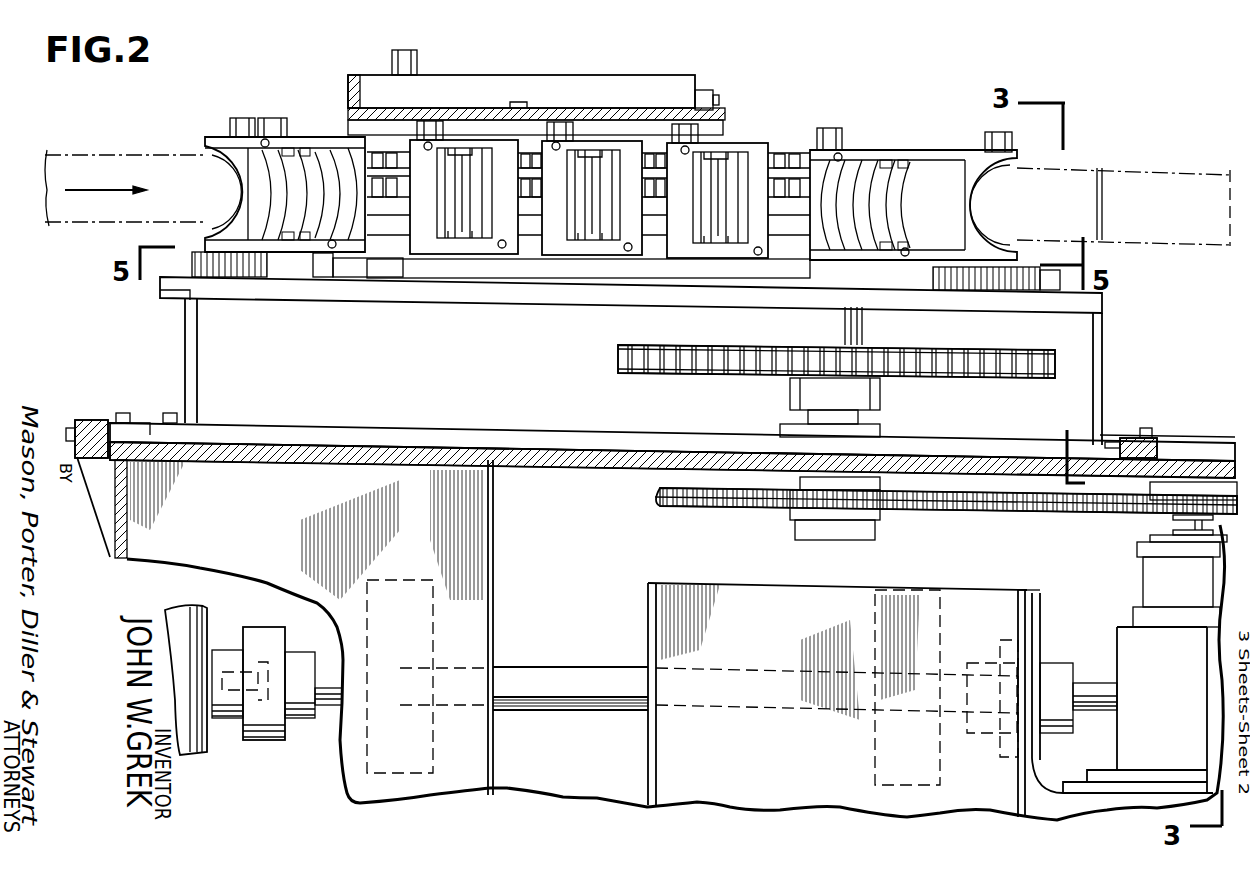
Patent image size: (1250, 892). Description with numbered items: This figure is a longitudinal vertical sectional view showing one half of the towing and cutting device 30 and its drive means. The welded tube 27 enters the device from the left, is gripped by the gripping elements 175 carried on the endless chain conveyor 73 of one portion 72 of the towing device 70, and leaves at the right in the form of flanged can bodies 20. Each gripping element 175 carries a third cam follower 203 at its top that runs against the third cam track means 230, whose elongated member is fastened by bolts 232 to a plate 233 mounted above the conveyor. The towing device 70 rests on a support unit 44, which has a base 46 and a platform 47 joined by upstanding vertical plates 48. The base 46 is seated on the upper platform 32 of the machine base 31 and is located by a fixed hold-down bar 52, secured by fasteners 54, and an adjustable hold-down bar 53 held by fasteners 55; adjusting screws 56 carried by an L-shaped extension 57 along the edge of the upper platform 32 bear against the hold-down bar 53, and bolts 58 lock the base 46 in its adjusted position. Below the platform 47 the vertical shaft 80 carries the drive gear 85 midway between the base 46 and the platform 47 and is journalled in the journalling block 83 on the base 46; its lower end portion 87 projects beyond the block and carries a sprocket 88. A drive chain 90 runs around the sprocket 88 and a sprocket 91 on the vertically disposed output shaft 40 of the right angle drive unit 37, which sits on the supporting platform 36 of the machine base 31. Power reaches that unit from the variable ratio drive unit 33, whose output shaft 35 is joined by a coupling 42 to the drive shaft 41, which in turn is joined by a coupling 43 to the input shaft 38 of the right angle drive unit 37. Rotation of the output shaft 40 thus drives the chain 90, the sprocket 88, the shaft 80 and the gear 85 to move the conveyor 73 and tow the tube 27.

The can bodies 20 is at (1145, 185).
The tube 27 is at (163, 154).
The towing and cutting device 30 is at (823, 106).
The machine base 31 is at (213, 556).
The upper platform 32 is at (265, 464).
The variable ratio drive unit 33 is at (202, 620).
The output shaft 35 is at (220, 722).
The supporting platform 36 is at (1075, 782).
The right angle drive unit 37 is at (1130, 648).
The input shaft 38 is at (1098, 713).
The output shaft 40 is at (1180, 517).
The drive shaft 41 is at (570, 673).
The coupling 42 is at (286, 637).
The coupling 43 is at (1045, 634).
The support unit 44 is at (1104, 330).
The base 46 is at (448, 433).
The platform 47 is at (165, 290).
The upstanding vertical plates 48 is at (185, 345).
The hold-down bar 52 is at (1164, 447).
The hold-down bar 53 is at (140, 422).
The fasteners 54 is at (1151, 430).
The fasteners 55 is at (118, 412).
The adjusting screws 56 is at (68, 426).
The L-shaped extension 57 is at (80, 458).
The bolts 58 is at (182, 418).
The towing device 70 is at (898, 138).
The portion 72 is at (625, 250).
The endless chain conveyor 73 is at (422, 152).
The shaft 80 is at (858, 326).
The journalling block 83 is at (883, 433).
The drive gear 85 is at (965, 378).
The end portion 87 is at (835, 540).
The sprocket 88 is at (905, 508).
The drive chain 90 is at (1068, 508).
The sprocket 91 is at (1213, 537).
The gripping elements 175 is at (517, 213).
The third cam follower 203 is at (277, 120).
The third cam track means 230 is at (483, 125).
The bolts 232 is at (522, 90).
The plate 233 is at (590, 110).